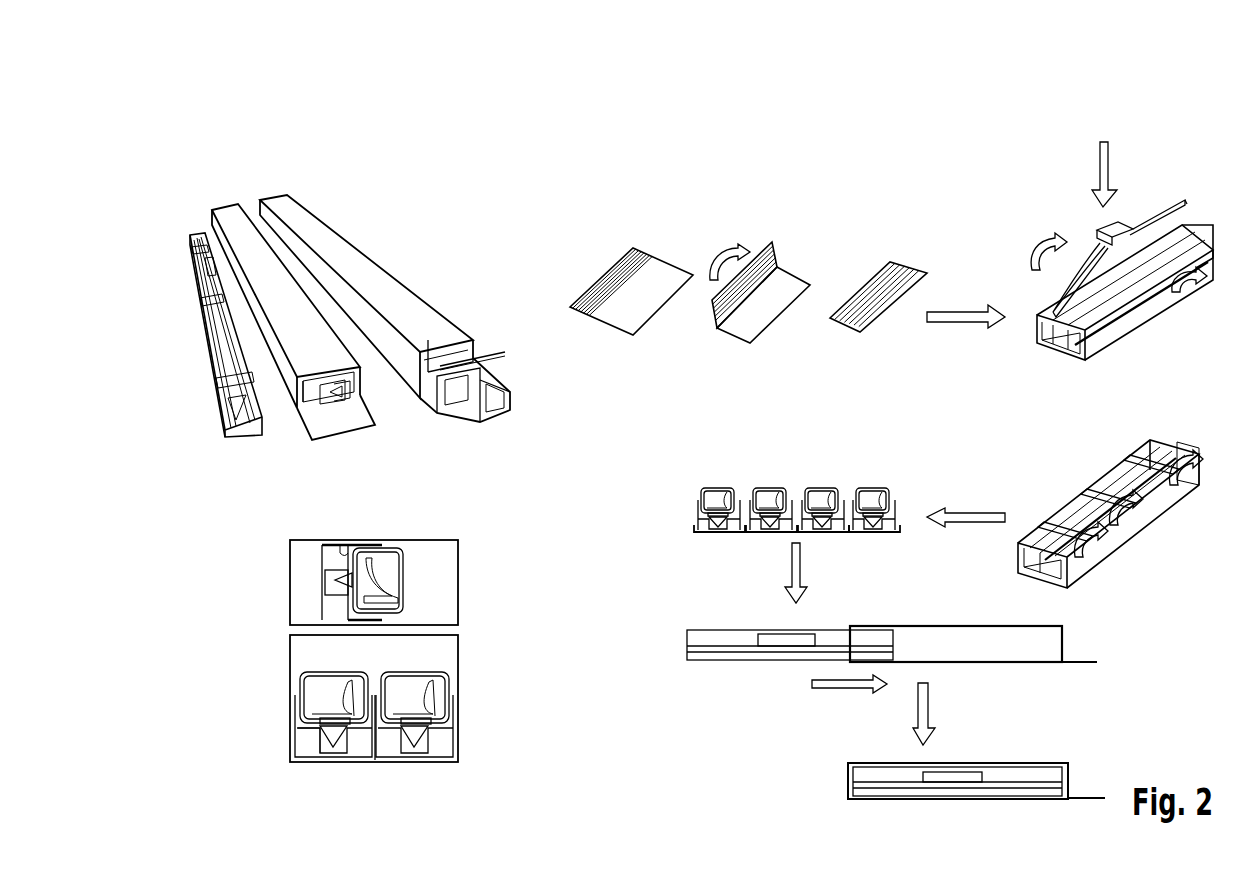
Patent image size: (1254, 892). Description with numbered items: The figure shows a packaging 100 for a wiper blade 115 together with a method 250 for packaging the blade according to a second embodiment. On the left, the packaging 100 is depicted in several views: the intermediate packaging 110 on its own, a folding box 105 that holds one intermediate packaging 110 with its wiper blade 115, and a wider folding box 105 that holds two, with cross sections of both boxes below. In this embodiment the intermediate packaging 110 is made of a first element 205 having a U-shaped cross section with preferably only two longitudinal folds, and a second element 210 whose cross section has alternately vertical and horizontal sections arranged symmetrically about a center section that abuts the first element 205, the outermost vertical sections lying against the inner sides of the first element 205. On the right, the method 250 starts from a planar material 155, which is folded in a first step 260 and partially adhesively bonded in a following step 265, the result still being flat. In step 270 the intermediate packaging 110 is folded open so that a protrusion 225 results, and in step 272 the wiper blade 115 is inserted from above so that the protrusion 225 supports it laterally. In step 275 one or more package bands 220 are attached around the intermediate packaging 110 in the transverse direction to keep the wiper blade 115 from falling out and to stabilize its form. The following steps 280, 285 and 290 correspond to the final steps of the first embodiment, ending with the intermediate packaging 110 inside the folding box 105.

The packaging 100 is at (190, 225).
The folding box 105 is at (278, 362).
The intermediate packaging 110 is at (343, 395).
The wiper blade 115 is at (337, 417).
The planar material 155 is at (602, 273).
The first element 205 is at (322, 555).
The second element 210 is at (340, 545).
The package band 220 is at (225, 383).
The protrusion 225 is at (305, 745).
The method 250 is at (767, 168).
The first step 260 is at (707, 232).
The step 265 is at (878, 257).
The step 270 is at (1027, 230).
The step 272 is at (1098, 167).
The step 275 is at (1198, 438).
The step 280 is at (973, 512).
The step 285 is at (790, 567).
The step 290 is at (928, 705).